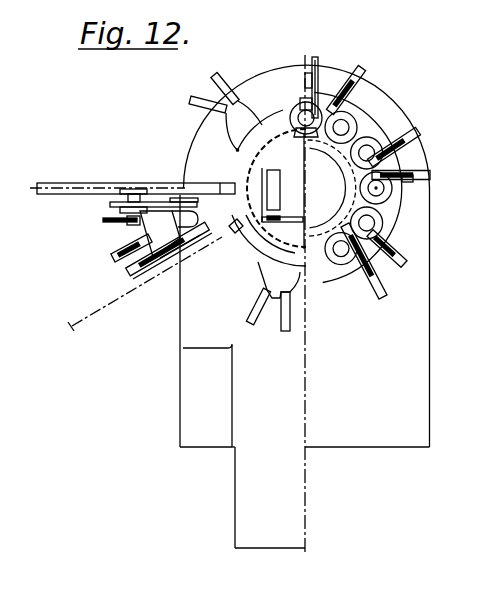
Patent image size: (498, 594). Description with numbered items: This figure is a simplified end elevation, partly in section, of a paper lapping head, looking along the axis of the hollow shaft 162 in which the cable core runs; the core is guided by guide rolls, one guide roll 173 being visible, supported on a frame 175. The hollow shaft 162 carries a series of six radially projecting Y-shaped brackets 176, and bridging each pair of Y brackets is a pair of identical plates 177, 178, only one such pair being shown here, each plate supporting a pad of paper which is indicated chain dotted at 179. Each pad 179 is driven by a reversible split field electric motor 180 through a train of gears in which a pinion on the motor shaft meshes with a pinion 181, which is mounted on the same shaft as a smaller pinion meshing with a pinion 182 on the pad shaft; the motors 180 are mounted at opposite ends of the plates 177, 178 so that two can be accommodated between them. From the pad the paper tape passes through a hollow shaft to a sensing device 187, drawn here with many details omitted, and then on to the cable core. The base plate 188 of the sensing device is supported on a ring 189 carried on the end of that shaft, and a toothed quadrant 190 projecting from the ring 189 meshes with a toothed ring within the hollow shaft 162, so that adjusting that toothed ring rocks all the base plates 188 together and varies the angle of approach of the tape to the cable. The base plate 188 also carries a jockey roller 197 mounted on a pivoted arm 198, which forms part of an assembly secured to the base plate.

The hollow shaft 162 is at (247, 168).
The guide roll 173 is at (277, 176).
The frame 175 is at (257, 241).
The Y-shaped bracket 176 is at (232, 90).
The plate 177 is at (130, 275).
The plate 178 is at (122, 196).
The pad of paper 179 is at (72, 193).
The reversible split field electric motor 180 is at (148, 229).
The pinion 181 is at (184, 252).
The pinion 182 is at (108, 220).
The sensing device 187 is at (366, 69).
The base plate 188 is at (326, 66).
The ring 189 is at (296, 106).
The toothed quadrant 190 is at (343, 150).
The jockey roller 197 is at (306, 97).
The pivoted arm 198 is at (311, 72).